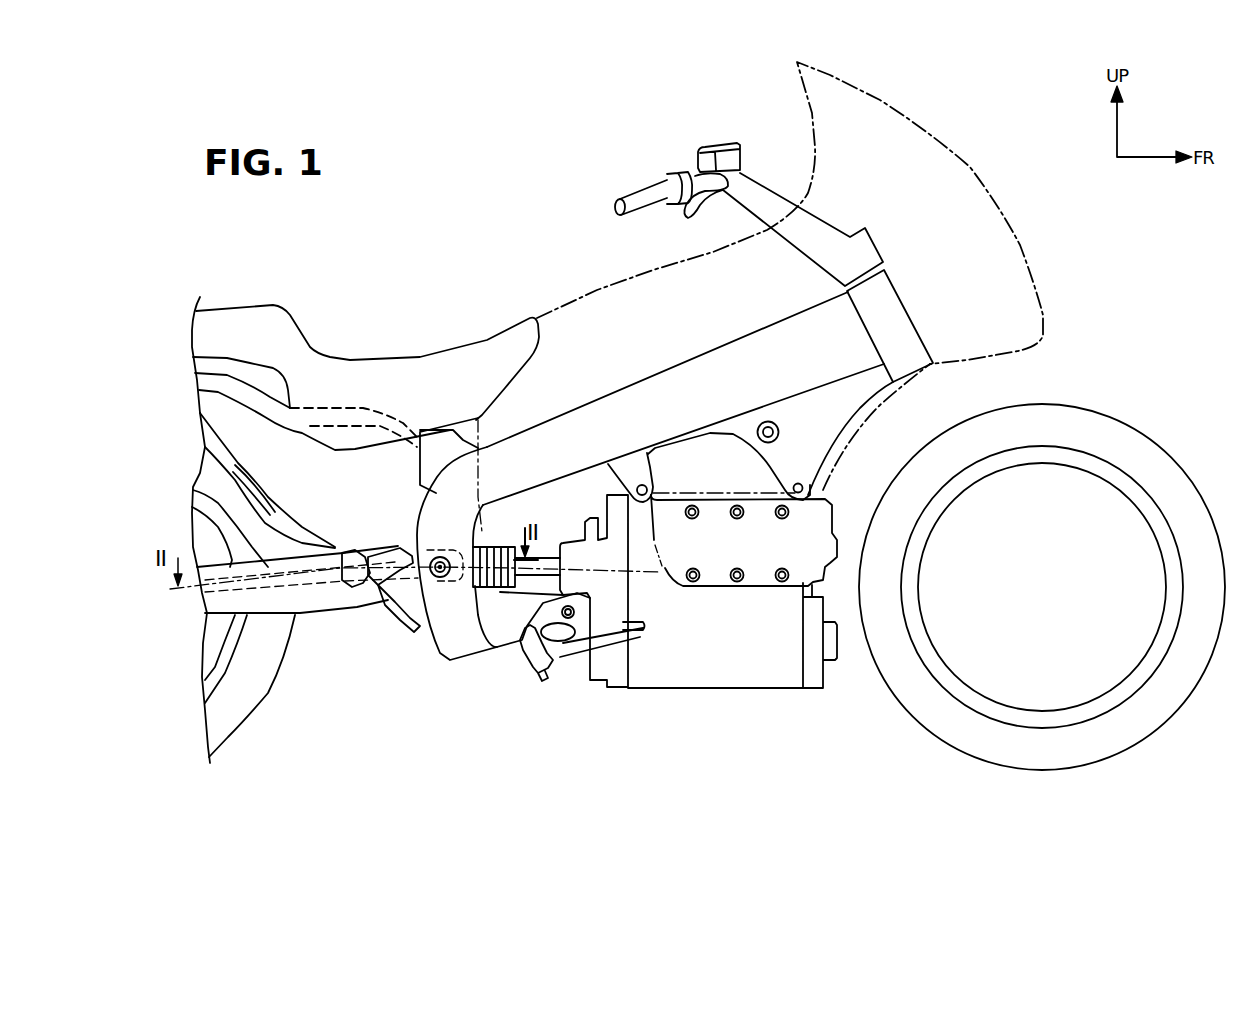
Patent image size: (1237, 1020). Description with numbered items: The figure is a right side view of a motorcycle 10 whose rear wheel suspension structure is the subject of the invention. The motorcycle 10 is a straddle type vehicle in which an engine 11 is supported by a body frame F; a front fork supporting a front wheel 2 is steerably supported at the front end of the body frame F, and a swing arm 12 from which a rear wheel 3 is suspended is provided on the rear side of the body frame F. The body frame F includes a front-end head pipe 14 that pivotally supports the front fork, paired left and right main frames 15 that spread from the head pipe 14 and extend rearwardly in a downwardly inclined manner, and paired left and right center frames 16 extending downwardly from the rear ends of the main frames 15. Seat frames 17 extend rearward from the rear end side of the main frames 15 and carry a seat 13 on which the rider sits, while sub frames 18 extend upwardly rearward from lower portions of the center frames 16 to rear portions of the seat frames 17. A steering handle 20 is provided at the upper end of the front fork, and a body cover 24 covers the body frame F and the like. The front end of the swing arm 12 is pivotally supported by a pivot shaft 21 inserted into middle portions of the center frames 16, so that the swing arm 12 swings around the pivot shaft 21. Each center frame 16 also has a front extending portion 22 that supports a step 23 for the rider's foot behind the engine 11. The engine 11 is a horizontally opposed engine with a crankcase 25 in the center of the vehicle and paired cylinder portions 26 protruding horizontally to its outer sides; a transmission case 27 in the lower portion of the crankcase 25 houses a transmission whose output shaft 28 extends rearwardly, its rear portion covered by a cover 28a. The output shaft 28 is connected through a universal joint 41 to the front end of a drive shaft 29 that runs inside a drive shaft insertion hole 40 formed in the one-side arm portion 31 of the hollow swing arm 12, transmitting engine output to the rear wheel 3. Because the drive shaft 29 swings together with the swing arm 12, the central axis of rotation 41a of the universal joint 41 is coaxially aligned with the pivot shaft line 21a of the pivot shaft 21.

The front wheel 2 is at (1113, 410).
The rear wheel 3 is at (225, 731).
The motorcycle 10 is at (765, 104).
The engine 11 is at (789, 700).
The swing arm 12 is at (302, 614).
The seat 13 is at (350, 357).
The head pipe 14 is at (913, 310).
The main frame 15 is at (641, 376).
The center frame 16 is at (363, 607).
The seat frame 17 is at (257, 400).
The sub frame 18 is at (265, 527).
The steering handle 20 is at (688, 167).
The pivot shaft 21 is at (450, 578).
The pivot shaft line 21a is at (442, 578).
The front extending portion 22 is at (518, 643).
The step 23 is at (562, 640).
The body cover 24 is at (884, 99).
The crankcase 25 is at (691, 689).
The cylinder portion 26 is at (777, 586).
The transmission case 27 is at (713, 673).
The output shaft 28 is at (533, 590).
The cover 28a is at (497, 590).
The drive shaft 29 is at (243, 590).
The one-side arm portion 31 is at (332, 600).
The drive shaft insertion hole 40 is at (345, 597).
The universal joint 41 is at (448, 549).
The central axis of rotation 41a is at (445, 565).
The body frame F is at (668, 366).